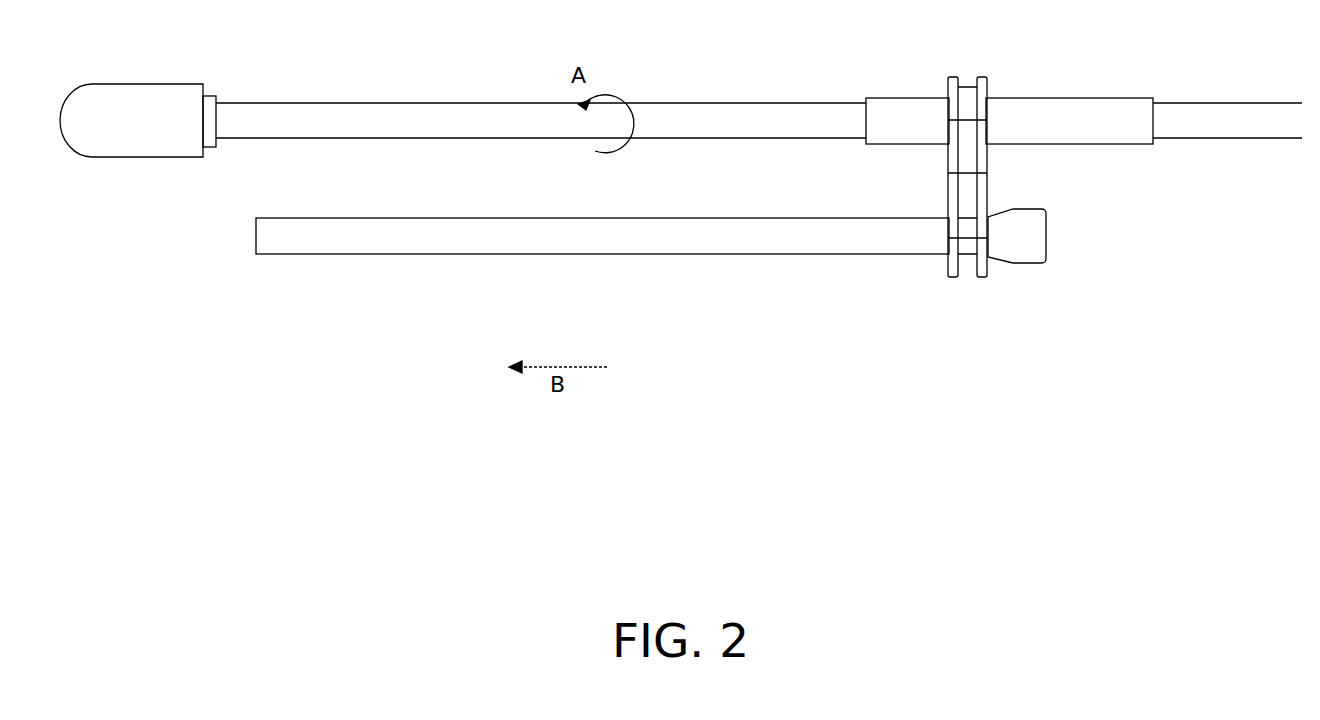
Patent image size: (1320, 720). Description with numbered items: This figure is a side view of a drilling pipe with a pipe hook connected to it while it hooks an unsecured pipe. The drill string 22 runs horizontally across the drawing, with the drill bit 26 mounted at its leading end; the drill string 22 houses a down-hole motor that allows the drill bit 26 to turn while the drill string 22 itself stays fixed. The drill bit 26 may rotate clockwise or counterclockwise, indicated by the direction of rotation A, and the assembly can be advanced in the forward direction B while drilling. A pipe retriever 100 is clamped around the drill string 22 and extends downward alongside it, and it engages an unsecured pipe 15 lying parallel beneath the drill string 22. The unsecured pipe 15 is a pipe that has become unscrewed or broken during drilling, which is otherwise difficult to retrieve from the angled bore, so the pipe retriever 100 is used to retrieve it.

The drill bit 26 is at (150, 84).
The drill string 22 is at (352, 103).
The pipe retriever 100 is at (1004, 98).
The unsecured pipe 15 is at (582, 255).